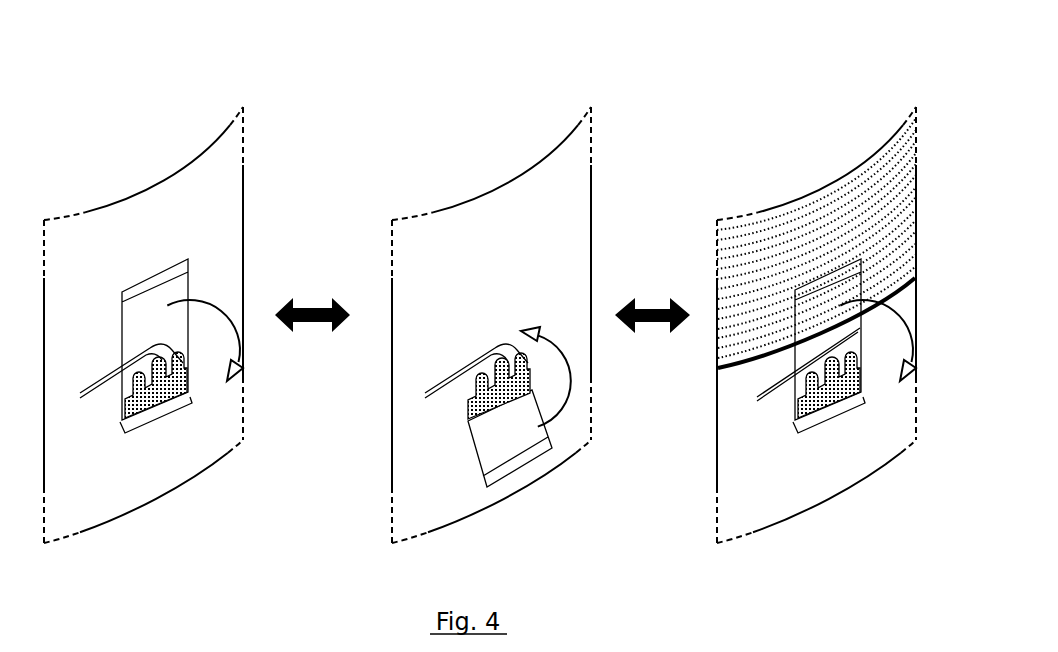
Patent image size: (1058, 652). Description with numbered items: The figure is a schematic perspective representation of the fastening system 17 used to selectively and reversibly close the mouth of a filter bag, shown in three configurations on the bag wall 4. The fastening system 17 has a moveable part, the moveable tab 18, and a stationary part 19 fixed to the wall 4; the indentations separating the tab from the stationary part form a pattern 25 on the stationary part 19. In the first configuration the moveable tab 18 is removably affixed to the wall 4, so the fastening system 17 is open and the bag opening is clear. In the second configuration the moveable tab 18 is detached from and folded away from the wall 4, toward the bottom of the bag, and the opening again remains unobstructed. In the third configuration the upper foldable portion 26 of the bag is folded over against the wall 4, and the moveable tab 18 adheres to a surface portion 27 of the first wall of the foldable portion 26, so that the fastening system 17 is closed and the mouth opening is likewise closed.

The wall 4 is at (207, 225).
The fastening system 17 is at (160, 421).
The moveable tab 18 is at (135, 312).
The stationary part 19 is at (122, 417).
The pattern 25 is at (457, 372).
The foldable portion 26 is at (872, 215).
The surface portion 27 is at (815, 312).